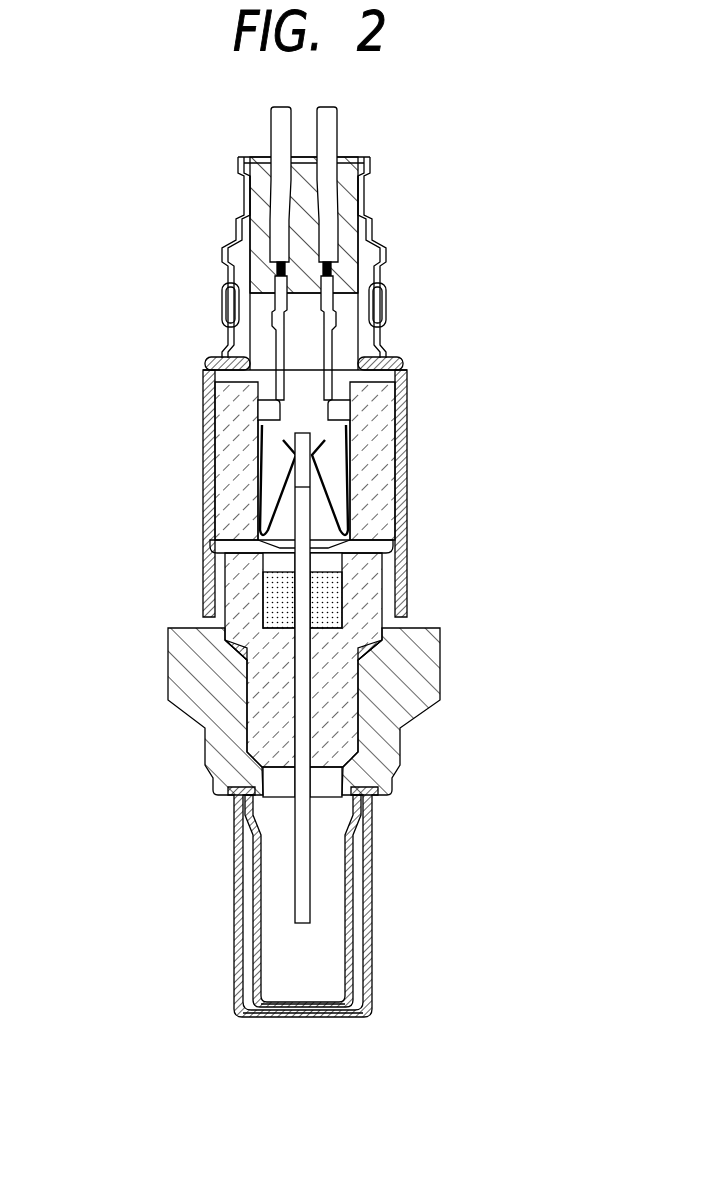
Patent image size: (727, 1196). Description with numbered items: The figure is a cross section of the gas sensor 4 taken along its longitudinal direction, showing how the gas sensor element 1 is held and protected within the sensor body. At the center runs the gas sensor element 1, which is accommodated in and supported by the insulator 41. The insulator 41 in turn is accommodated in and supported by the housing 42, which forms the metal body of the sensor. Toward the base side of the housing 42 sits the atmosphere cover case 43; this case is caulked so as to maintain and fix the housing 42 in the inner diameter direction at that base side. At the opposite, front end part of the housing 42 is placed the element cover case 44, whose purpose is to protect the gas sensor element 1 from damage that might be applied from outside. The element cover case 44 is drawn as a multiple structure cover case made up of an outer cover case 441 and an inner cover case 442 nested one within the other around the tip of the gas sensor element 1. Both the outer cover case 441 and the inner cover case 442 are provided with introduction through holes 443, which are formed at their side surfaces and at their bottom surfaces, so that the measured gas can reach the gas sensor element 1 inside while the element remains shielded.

The gas sensor 4 is at (404, 190).
The gas sensor element 1 is at (300, 880).
The insulator 41 is at (268, 675).
The housing 42 is at (420, 665).
The atmosphere cover case 43 is at (205, 469).
The element cover case 44 is at (233, 912).
The outer cover case 441 is at (235, 1000).
The inner cover case 442 is at (333, 1008).
The introduction through holes 443 is at (372, 957).